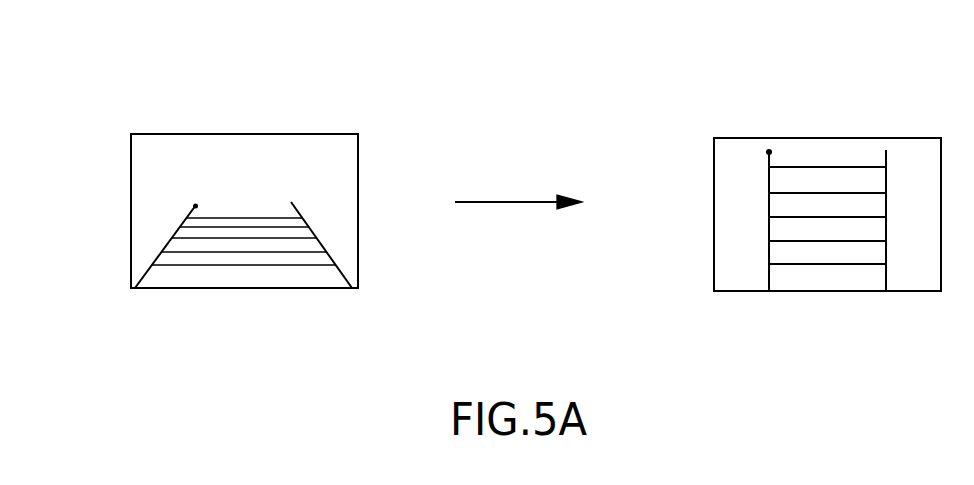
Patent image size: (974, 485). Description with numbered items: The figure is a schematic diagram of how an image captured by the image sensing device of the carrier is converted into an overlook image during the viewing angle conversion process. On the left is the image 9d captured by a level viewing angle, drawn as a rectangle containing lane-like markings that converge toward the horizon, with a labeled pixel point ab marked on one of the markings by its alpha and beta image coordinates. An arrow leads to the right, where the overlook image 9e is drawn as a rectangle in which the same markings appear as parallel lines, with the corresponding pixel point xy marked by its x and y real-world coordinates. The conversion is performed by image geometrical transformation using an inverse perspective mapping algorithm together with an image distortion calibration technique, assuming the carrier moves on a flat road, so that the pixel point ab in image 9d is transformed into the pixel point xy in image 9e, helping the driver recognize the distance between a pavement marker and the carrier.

The image captured by level viewing angle 9d is at (104, 100).
The overlook image 9e is at (677, 102).
The detected point (α,β) in camera image ab is at (174, 189).
The mapped point (x,y) in transformed image xy is at (797, 153).